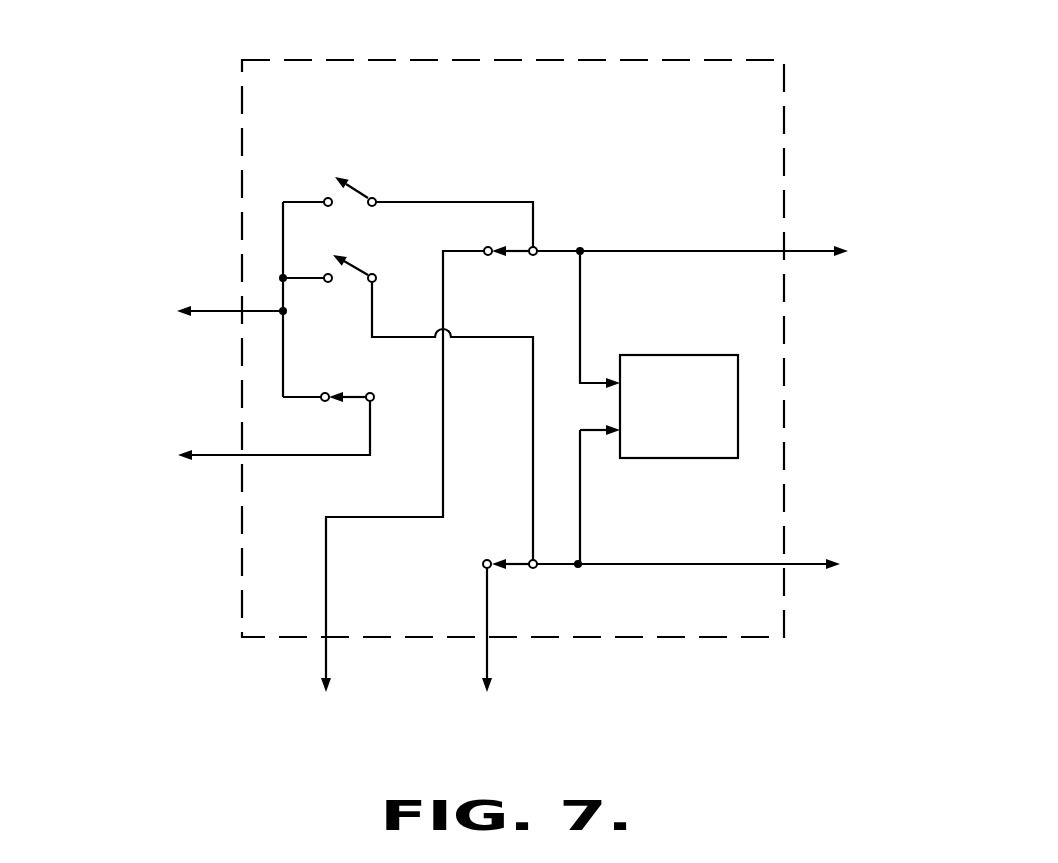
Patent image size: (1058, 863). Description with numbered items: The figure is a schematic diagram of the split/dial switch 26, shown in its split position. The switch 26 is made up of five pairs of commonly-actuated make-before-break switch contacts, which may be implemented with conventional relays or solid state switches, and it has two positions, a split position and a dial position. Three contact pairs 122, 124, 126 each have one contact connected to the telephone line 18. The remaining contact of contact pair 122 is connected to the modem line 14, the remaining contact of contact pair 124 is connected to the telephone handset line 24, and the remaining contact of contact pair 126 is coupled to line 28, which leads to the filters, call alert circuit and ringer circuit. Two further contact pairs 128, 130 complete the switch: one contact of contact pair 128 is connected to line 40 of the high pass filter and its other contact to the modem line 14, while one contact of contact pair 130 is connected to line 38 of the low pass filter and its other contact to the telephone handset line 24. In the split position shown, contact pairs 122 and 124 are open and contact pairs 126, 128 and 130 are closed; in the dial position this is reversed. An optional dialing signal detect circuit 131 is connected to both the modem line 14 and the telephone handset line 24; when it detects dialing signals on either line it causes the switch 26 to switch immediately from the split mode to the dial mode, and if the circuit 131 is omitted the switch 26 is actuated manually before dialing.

The split/dial switch 26 is at (590, 65).
The contact pair 122 is at (327, 188).
The contact pair 124 is at (328, 265).
The contact pair 126 is at (343, 390).
The contact pair 128 is at (522, 253).
The contact pair 130 is at (515, 567).
The modem line 14 is at (808, 255).
The telephone line 18 is at (220, 313).
The telephone handset line 24 is at (808, 568).
The line 28 is at (225, 458).
The dialing signal detect circuit 131 is at (697, 352).
The line of low pass filter 38 is at (490, 660).
The line of high pass filter 40 is at (328, 658).